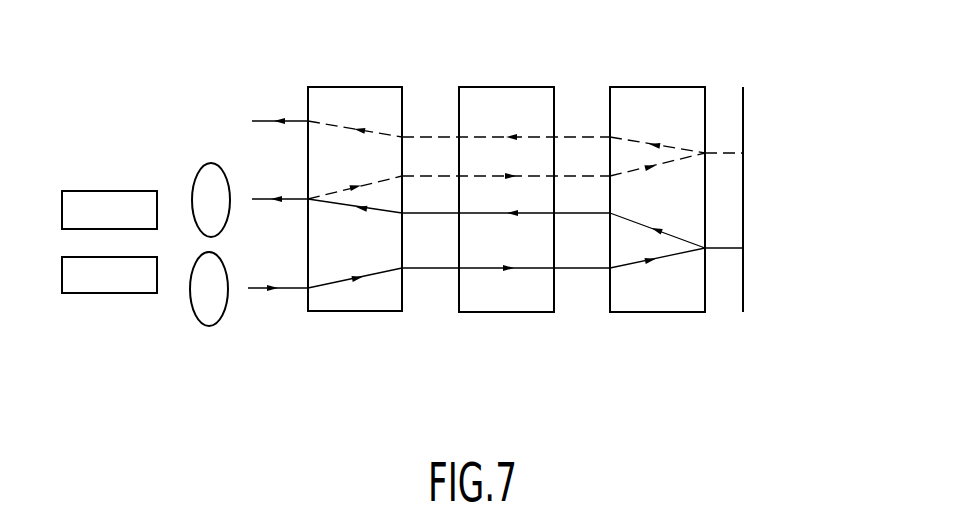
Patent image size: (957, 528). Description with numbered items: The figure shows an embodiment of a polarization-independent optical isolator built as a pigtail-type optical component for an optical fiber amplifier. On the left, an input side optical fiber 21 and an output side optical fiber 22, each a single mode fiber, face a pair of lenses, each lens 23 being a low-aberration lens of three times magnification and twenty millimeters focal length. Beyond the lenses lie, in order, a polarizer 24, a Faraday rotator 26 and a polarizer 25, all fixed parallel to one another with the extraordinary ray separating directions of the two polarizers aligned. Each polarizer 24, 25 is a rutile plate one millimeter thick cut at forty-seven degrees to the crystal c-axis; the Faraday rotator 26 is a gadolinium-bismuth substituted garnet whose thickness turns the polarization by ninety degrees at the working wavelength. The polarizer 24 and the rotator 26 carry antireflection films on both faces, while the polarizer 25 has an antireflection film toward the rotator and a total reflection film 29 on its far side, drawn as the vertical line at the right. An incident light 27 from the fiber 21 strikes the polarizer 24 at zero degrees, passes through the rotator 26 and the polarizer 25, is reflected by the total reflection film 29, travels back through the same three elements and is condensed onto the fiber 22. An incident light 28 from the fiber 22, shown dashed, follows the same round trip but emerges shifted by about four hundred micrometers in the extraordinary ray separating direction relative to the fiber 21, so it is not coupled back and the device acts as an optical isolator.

The input side optical fiber 21 is at (113, 293).
The output side optical fiber 22 is at (87, 190).
The lens 23 is at (212, 163).
The polarizer 24 is at (360, 87).
The polarizer 25 is at (653, 87).
The Faraday rotator 26 is at (507, 87).
The incident light 27 is at (373, 275).
The incident light 28 is at (377, 132).
The total reflection film 29 is at (743, 117).